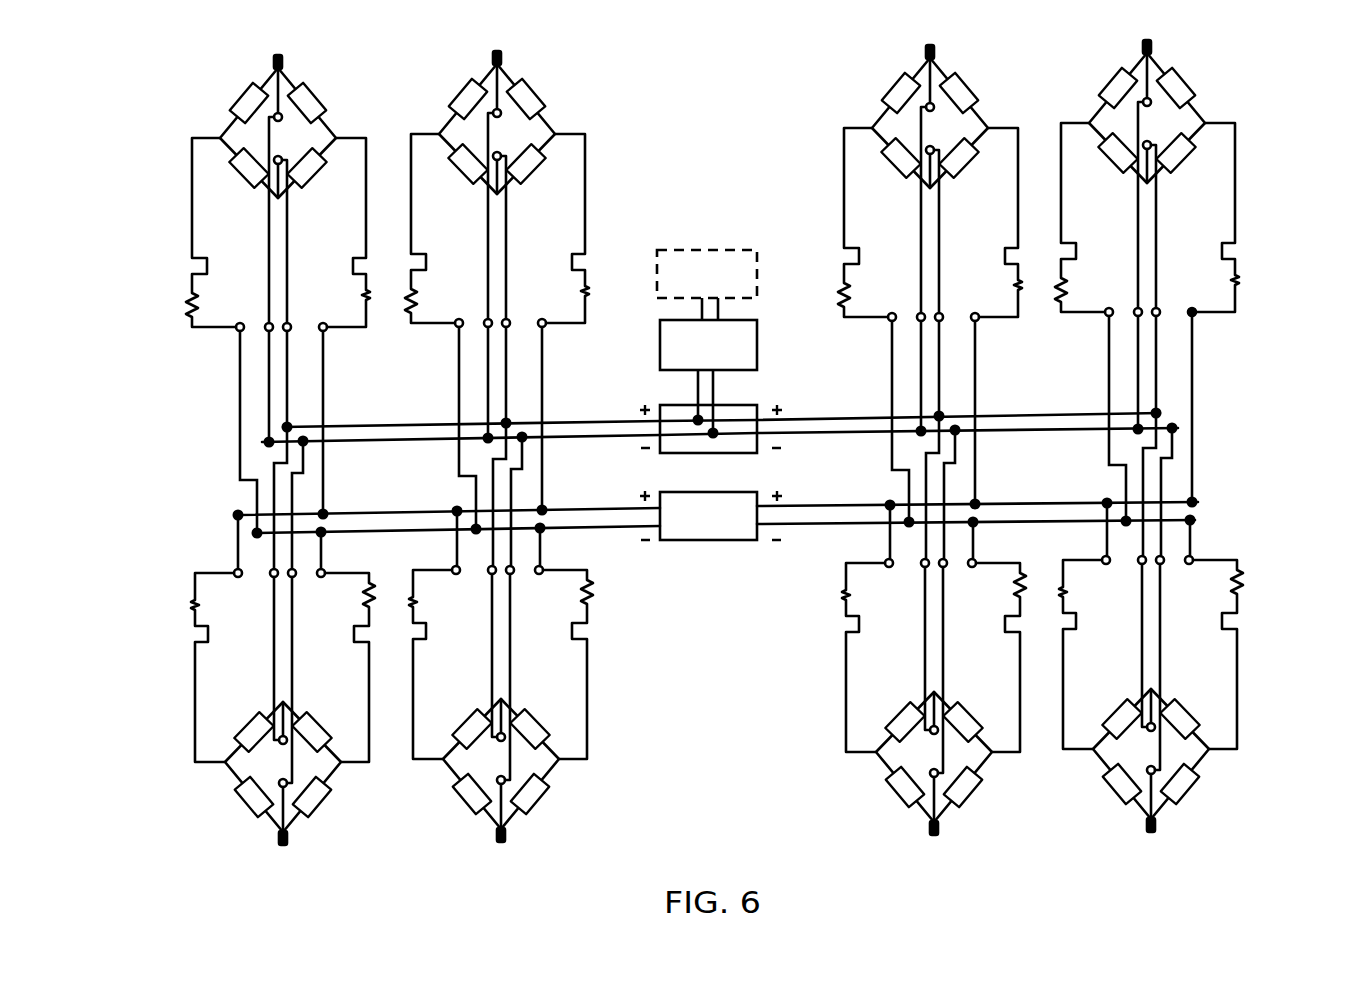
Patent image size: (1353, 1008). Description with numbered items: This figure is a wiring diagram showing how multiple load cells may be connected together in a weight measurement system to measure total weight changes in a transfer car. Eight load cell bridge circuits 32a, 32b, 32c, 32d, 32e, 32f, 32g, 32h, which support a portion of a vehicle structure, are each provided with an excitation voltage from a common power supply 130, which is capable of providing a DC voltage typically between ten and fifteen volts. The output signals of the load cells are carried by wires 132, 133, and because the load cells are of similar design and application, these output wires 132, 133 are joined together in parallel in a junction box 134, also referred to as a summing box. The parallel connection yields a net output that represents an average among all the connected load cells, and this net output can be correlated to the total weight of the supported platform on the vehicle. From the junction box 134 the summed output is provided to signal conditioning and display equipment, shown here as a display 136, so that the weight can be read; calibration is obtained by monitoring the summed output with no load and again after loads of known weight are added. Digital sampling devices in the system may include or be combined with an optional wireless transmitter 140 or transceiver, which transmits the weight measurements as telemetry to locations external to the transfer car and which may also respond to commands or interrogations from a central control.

The load cell bridge circuit 32a is at (178, 196).
The load cell bridge circuit 32b is at (600, 191).
The load cell bridge circuit 32c is at (835, 183).
The load cell bridge circuit 32d is at (1250, 180).
The load cell bridge circuit 32e is at (1250, 655).
The load cell bridge circuit 32f is at (848, 664).
The load cell bridge circuit 32g is at (600, 674).
The load cell bridge circuit 32h is at (188, 690).
The power supply 130 is at (690, 540).
The wire 132 is at (562, 421).
The wire 133 is at (562, 437).
The junction box 134 is at (735, 405).
The display 136 is at (758, 347).
The wireless transmitter 140 is at (674, 250).